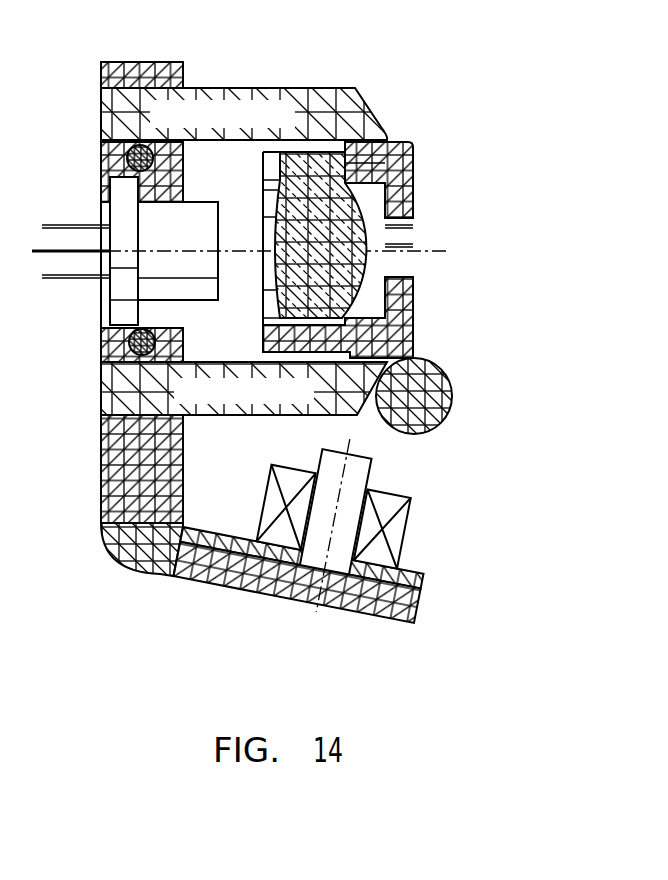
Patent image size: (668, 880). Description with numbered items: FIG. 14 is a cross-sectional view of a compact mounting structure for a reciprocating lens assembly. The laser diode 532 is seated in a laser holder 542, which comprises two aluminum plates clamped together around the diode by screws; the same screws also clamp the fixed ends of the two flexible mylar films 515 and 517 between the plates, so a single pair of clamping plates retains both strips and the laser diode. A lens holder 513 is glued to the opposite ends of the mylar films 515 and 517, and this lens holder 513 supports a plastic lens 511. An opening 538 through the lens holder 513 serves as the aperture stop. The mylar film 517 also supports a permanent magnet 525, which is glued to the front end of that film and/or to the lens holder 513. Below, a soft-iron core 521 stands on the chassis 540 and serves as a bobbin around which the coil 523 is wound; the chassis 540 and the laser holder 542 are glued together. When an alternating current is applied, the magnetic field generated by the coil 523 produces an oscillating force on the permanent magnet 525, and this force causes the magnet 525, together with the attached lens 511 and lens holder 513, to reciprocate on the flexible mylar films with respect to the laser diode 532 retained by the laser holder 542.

The plastic lens 511 is at (365, 217).
The lens holder 513 is at (407, 315).
The mylar film 515 is at (294, 88).
The mylar film 517 is at (293, 417).
The soft-iron core 521 is at (365, 477).
The coil 523 is at (412, 528).
The permanent magnet 525 is at (445, 399).
The laser diode 532 is at (118, 206).
The opening 538 is at (407, 240).
The chassis 540 is at (427, 573).
The laser holder 542 is at (117, 80).